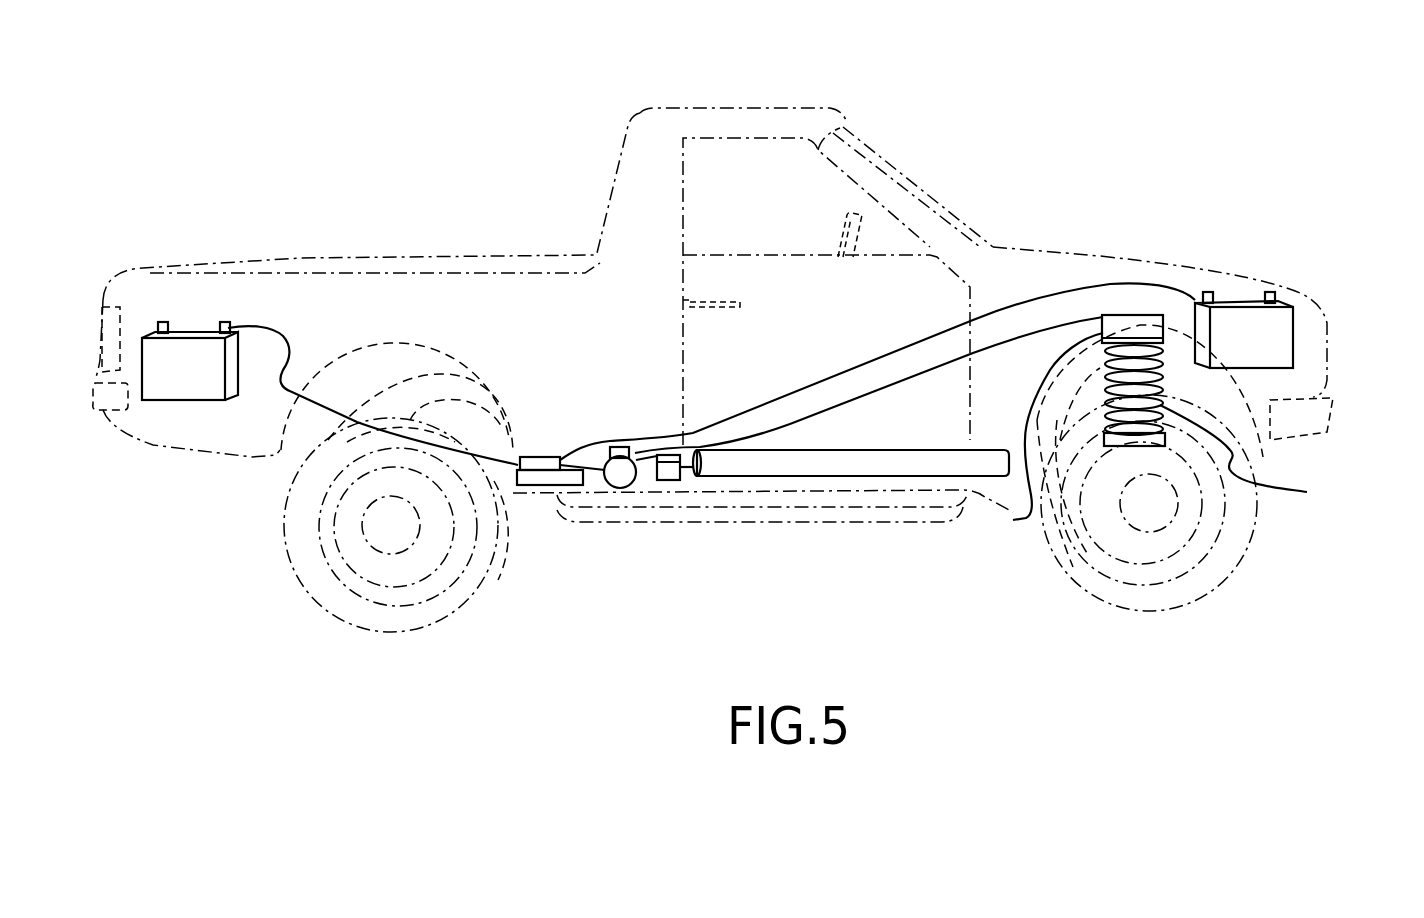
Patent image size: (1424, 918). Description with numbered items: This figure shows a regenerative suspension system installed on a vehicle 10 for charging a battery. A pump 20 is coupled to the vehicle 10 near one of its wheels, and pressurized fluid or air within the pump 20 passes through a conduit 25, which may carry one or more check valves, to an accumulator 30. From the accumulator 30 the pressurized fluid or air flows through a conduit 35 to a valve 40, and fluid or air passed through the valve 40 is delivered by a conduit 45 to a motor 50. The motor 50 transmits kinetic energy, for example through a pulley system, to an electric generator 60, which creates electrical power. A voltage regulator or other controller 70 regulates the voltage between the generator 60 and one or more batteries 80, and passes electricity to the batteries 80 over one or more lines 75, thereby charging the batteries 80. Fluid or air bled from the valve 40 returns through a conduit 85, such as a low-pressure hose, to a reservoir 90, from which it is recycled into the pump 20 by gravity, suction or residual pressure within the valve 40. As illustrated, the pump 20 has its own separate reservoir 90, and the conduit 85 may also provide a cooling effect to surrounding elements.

The vehicle 10 is at (797, 108).
The pump 20 is at (1300, 491).
The conduit 25 is at (1013, 520).
The accumulator 30 is at (878, 468).
The conduit 35 is at (690, 478).
The valve 40 is at (673, 480).
The conduit 45 is at (647, 477).
The motor 50 is at (620, 472).
The electric generator 60 is at (615, 447).
The controller 70 is at (540, 482).
The line 75 is at (285, 339).
The battery 80 is at (163, 385).
The conduit 85 is at (1053, 323).
The reservoir 90 is at (1150, 327).